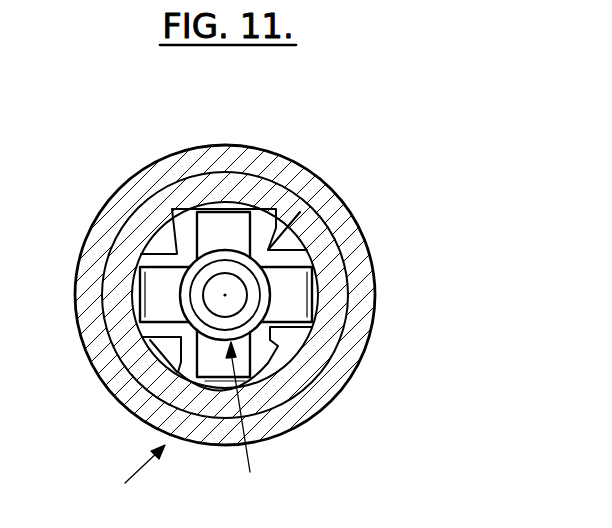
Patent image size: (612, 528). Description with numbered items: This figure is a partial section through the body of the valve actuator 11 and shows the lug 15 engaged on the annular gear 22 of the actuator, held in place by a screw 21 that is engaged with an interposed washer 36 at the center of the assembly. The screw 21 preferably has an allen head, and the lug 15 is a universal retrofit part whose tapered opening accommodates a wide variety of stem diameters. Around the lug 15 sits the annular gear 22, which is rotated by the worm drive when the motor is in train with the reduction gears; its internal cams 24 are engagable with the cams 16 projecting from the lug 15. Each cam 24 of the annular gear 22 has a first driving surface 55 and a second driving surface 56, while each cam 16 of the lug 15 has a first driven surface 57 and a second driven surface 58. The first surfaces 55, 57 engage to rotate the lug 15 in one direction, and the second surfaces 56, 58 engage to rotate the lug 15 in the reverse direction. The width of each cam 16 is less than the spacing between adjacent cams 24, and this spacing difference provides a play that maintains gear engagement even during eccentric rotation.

The valve actuator 11 is at (133, 475).
The lug 15 is at (248, 421).
The cam 16 is at (225, 227).
The screw 21 is at (219, 292).
The annular gear 22 is at (157, 379).
The internal cam 24 is at (274, 248).
The washer 36 is at (187, 300).
The first driving surface 55 is at (272, 252).
The second driving surface 56 is at (254, 200).
The first driven surface 57 is at (293, 283).
The second driven surface 58 is at (183, 386).